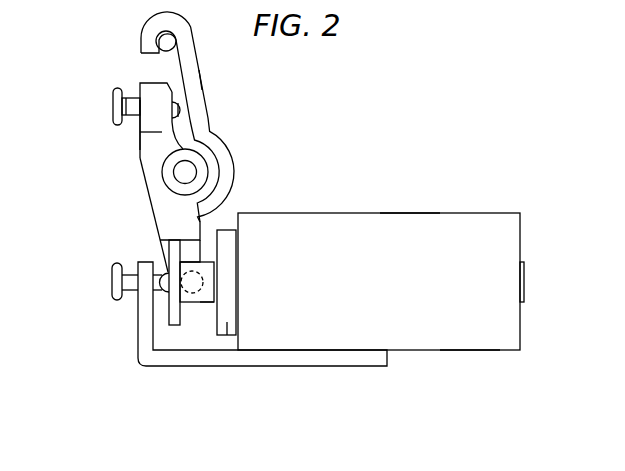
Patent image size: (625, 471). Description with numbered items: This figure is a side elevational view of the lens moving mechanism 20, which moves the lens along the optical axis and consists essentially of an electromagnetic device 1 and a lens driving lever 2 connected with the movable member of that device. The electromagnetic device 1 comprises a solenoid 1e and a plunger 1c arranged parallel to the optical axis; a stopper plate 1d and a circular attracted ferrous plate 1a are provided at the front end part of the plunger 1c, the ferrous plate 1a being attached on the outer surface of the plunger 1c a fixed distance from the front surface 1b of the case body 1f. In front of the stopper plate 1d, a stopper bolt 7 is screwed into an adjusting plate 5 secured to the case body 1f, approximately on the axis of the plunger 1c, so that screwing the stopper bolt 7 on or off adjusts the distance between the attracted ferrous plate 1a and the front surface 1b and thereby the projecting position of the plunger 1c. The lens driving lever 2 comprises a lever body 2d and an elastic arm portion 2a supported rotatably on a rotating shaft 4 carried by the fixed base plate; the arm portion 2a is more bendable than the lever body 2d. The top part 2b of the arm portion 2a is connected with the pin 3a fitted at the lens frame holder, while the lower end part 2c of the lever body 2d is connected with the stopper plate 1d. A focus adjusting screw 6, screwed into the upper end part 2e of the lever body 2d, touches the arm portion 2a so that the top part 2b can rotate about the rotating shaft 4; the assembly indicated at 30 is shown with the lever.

The electromagnetic device 1 is at (455, 185).
The attracted ferrous plate 1a is at (227, 325).
The front surface of case body 1b is at (235, 223).
The plunger 1c is at (208, 305).
The stopper plate 1d is at (172, 315).
The solenoid 1e is at (409, 219).
The case body 1f is at (473, 350).
The lens driving lever 2 is at (144, 170).
The arm portion 2a is at (229, 158).
The top part of arm portion 2b is at (142, 39).
The lower end part of lever body 2c is at (194, 293).
The lever body 2d is at (158, 217).
The upper end part of lever body 2e is at (150, 117).
The pin 3a is at (173, 38).
The rotating shaft 4 is at (187, 172).
The adjusting plate 5 is at (160, 362).
The focus adjusting screw 6 is at (112, 106).
The stopper bolt 7 is at (116, 282).
The lens moving mechanism 20 is at (134, 197).
The hook assembly 30 is at (244, 129).